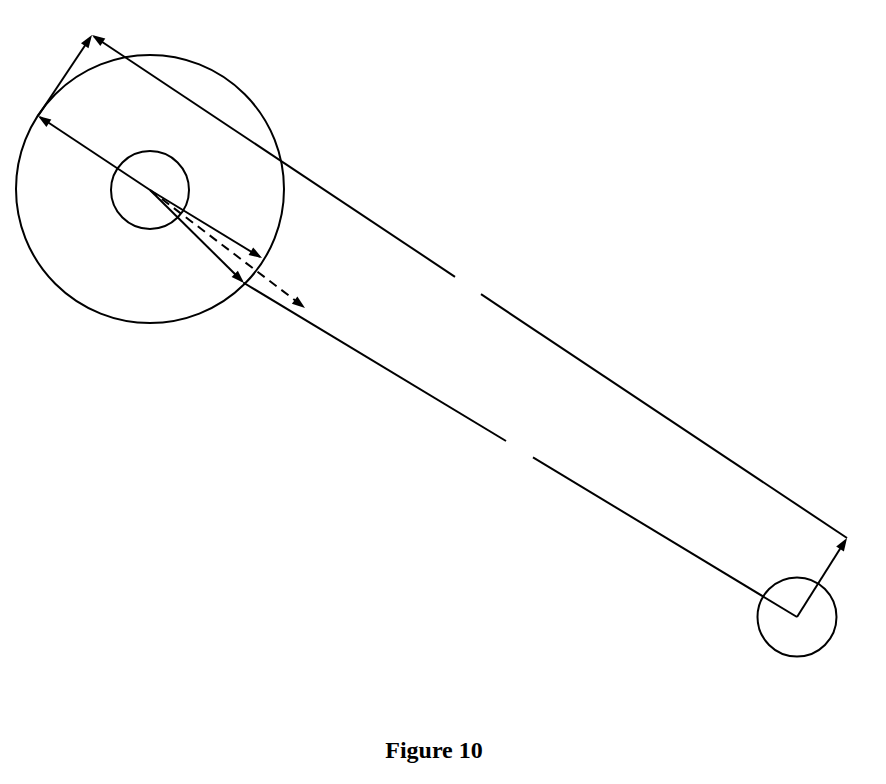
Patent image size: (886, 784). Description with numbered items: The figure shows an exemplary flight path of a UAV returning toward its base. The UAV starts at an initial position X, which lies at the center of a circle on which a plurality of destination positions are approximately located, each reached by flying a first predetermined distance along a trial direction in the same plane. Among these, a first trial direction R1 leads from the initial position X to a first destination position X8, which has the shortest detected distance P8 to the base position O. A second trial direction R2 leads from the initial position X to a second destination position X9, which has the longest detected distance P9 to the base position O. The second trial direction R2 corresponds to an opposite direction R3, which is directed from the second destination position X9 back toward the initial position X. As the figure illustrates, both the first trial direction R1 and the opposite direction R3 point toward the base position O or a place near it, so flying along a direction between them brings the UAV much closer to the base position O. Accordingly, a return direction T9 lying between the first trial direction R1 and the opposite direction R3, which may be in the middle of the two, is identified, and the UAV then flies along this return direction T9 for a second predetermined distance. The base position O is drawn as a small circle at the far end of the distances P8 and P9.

The initial position X is at (155, 190).
The second destination position X9 is at (57, 75).
The first destination position X8 is at (249, 302).
The first trial direction R1 is at (197, 236).
The second trial direction R2 is at (94, 153).
The opposite direction R3 is at (206, 224).
The return direction T9 is at (227, 249).
The longest detected distance P9 is at (469, 326).
The shortest detected distance P8 is at (520, 450).
The base position O is at (797, 631).